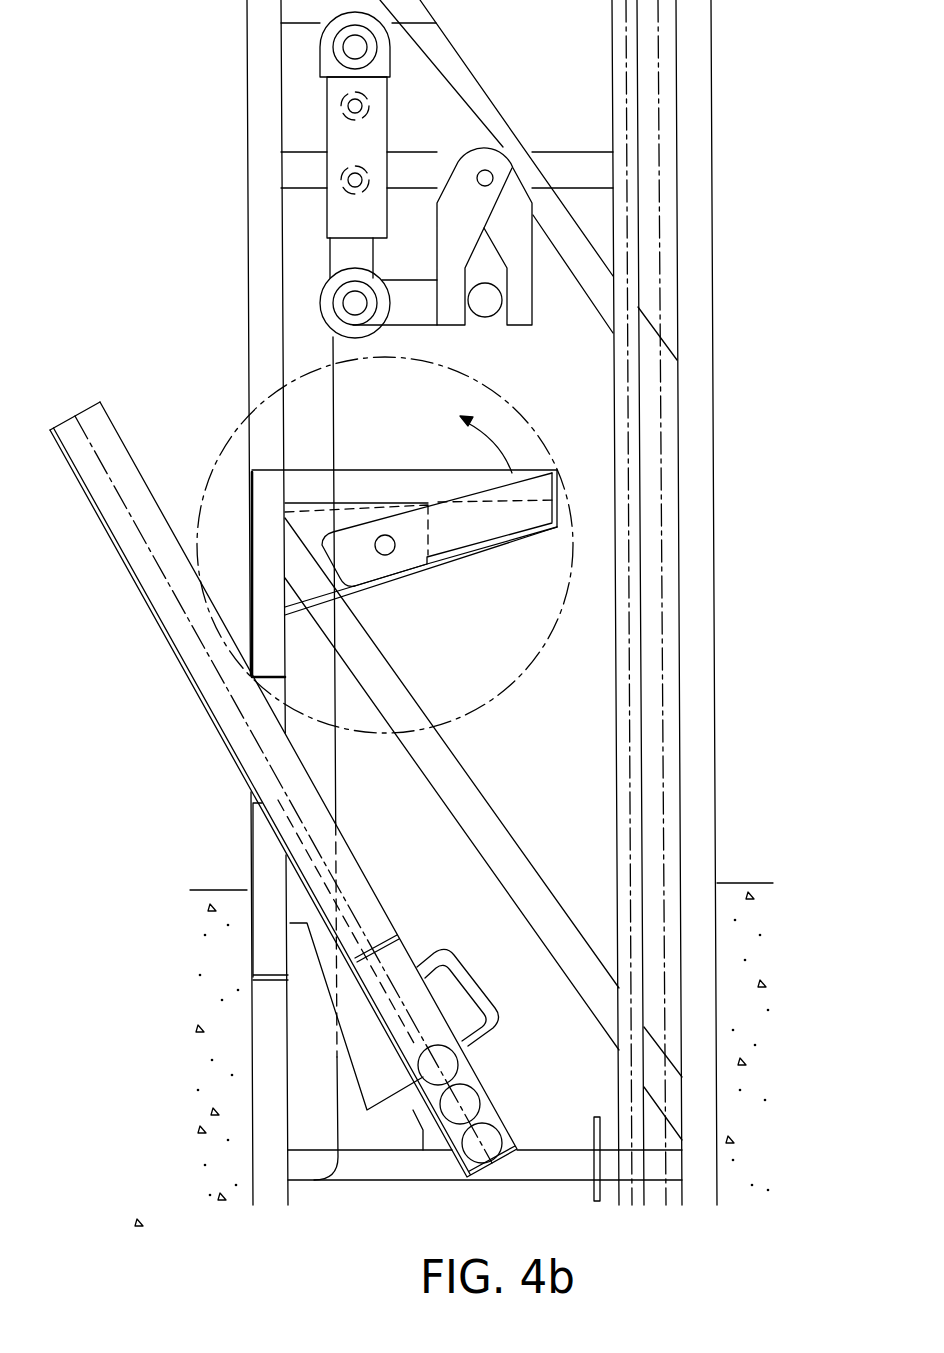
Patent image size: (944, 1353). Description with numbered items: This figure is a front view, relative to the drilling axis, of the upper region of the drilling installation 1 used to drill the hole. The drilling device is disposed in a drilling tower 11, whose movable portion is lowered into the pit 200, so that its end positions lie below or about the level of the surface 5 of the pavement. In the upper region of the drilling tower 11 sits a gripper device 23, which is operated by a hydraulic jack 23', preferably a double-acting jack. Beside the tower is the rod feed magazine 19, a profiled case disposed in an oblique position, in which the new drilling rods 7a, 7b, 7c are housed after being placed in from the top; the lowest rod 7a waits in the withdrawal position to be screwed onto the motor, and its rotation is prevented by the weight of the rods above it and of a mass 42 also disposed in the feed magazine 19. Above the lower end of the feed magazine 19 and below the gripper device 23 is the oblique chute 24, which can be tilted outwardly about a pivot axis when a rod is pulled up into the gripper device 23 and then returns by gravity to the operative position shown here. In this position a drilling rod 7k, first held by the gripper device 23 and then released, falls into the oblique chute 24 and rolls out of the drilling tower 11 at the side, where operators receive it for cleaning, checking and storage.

The installation 1 is at (142, 449).
The surface of the pavement 5 is at (205, 1053).
The drilling rod 7a is at (495, 1140).
The drilling rod 7b is at (473, 1102).
The drilling rod 7c is at (450, 1062).
The drilling rod 7k is at (483, 303).
The drilling tower 11 is at (703, 543).
The rod feed magazine 19 is at (132, 590).
The gripper device 23 is at (513, 264).
The hydraulic jack 23' is at (293, 175).
The oblique chute 24 is at (421, 515).
The mass 42 is at (357, 960).
The pit 200 is at (597, 933).